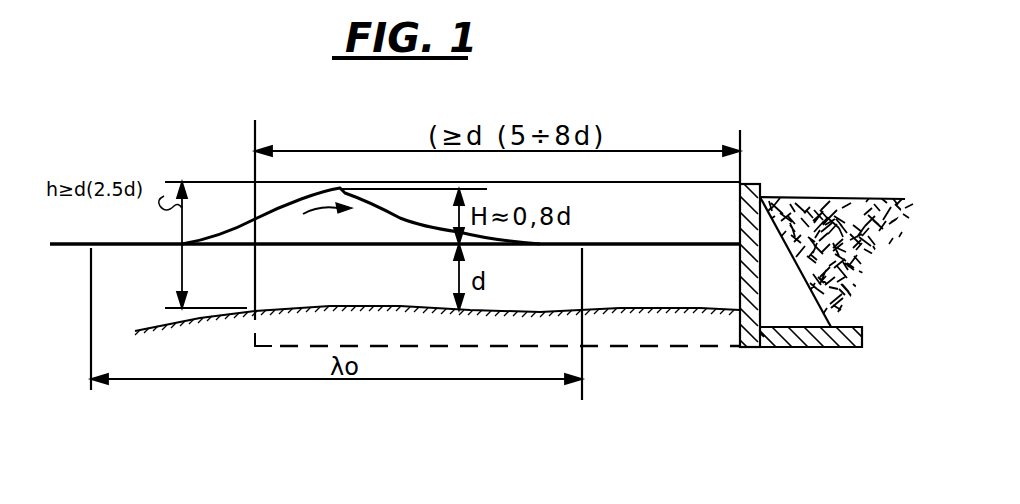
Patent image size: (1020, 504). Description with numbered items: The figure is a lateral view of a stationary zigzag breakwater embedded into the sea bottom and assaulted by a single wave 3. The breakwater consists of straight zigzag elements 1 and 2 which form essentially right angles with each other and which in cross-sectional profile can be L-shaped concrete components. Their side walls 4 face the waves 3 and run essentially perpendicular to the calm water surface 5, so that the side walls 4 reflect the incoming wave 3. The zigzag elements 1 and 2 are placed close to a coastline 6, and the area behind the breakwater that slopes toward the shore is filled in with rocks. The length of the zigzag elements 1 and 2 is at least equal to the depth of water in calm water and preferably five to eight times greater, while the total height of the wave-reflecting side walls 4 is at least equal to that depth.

The zigzag element 1 is at (266, 202).
The zigzag element 2 is at (760, 196).
The wave 3 is at (302, 239).
The side wall 4 is at (740, 218).
The calm water surface 5 is at (86, 234).
The coastline 6 is at (831, 198).